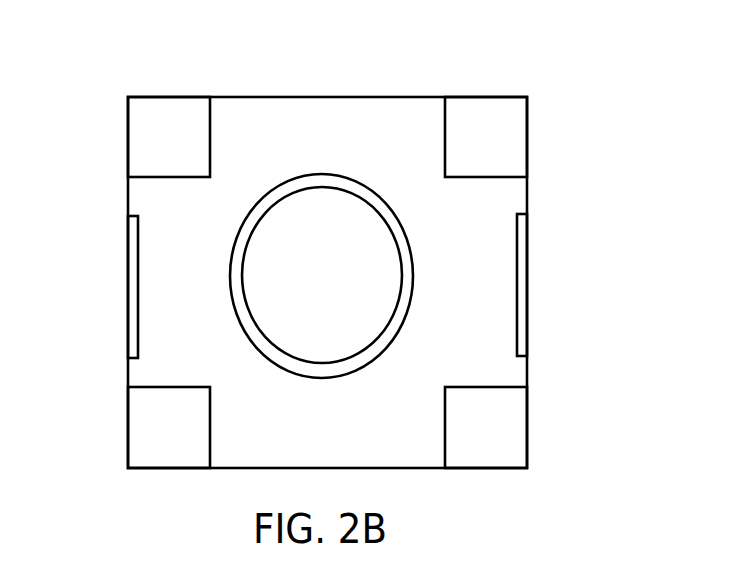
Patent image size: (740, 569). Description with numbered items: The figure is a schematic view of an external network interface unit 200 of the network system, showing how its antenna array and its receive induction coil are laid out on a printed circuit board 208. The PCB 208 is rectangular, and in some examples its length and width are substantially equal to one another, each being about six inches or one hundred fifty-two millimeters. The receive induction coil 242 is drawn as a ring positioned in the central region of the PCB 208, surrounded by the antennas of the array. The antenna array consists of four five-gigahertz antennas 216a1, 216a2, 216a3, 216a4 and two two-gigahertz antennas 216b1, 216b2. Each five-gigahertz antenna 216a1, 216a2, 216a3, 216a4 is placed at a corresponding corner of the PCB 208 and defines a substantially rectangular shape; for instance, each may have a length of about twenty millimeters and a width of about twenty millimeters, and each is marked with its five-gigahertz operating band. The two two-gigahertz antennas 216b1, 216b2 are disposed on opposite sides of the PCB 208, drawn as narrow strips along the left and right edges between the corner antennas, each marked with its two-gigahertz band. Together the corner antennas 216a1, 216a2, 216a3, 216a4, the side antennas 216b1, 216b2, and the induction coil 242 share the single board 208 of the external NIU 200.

The external NIU 200 is at (473, 29).
The printed circuit board 208 is at (327, 117).
The receive induction coil 242 is at (238, 283).
The 5 GHz antenna 216a1 is at (168, 120).
The 5 GHz antenna 216a2 is at (490, 120).
The 5 GHz antenna 216a3 is at (165, 453).
The 5 GHz antenna 216a4 is at (483, 455).
The 2 GHz antenna 216b1 is at (130, 287).
The 2 GHz antenna 216b2 is at (522, 270).